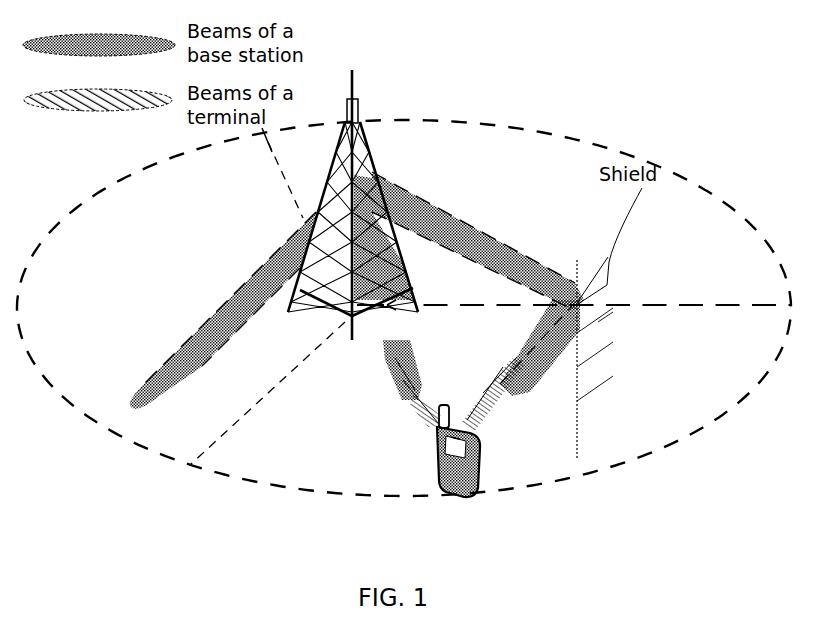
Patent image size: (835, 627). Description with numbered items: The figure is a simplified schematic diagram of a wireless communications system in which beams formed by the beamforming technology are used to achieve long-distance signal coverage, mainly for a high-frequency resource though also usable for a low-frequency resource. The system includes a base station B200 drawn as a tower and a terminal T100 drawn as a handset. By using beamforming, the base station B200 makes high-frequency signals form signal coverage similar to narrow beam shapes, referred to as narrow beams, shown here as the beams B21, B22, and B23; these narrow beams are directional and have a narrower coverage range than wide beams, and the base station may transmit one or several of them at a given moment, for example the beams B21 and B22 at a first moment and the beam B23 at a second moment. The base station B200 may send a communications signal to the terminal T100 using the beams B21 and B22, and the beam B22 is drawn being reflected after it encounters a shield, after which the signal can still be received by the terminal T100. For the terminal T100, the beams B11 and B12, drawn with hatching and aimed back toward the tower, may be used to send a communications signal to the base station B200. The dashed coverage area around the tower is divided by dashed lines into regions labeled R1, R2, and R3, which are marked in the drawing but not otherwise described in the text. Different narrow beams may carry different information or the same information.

The base station B200 is at (353, 194).
The terminal T100 is at (453, 465).
The narrow beam B21 is at (395, 360).
The narrow beam B22 is at (469, 284).
The narrow beam B23 is at (225, 308).
The beam B11 is at (426, 392).
The beam B12 is at (493, 394).
The region R1 is at (150, 218).
The region R2 is at (515, 181).
The region R3 is at (330, 433).